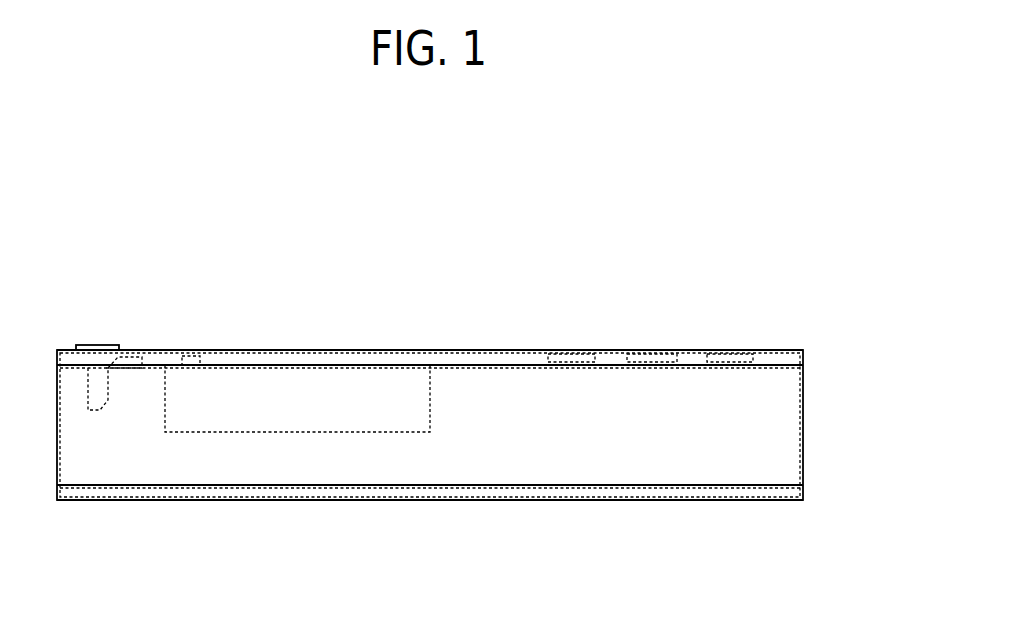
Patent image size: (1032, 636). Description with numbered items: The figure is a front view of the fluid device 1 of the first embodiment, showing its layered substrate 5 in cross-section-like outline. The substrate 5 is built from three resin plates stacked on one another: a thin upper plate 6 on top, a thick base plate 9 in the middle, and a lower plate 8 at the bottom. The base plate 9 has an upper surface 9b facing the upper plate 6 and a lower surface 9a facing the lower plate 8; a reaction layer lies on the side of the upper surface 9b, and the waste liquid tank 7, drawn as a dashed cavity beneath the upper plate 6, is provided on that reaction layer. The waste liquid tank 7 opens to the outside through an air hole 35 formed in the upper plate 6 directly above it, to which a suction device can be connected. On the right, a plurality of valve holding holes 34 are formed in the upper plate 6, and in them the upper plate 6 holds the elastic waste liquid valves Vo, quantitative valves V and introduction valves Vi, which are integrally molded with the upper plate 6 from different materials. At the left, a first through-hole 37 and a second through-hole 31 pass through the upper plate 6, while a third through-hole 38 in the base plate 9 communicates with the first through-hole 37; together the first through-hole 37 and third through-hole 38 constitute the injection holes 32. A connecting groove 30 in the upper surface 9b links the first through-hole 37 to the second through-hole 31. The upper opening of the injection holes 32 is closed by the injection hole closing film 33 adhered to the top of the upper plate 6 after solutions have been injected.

The fluid device 1 is at (766, 220).
The substrate 5 is at (858, 348).
The upper plate 6 is at (800, 356).
The waste liquid tank 7 is at (430, 395).
The lower plate 8 is at (800, 492).
The base plate 9 is at (790, 424).
The lower surface 9a is at (505, 487).
The upper surface 9b is at (453, 365).
The connecting groove 30 is at (107, 368).
The second through-hole 31 is at (141, 352).
The injection holes 32 is at (122, 551).
The injection hole closing film 33 is at (86, 345).
The valve holding holes 34 is at (561, 352).
The air hole 35 is at (186, 356).
The first through-hole 37 is at (88, 370).
The third through-hole 38 is at (98, 412).
The waste liquid valves Vo is at (582, 352).
The quantitative valves V is at (663, 352).
The introduction valves Vi is at (736, 352).